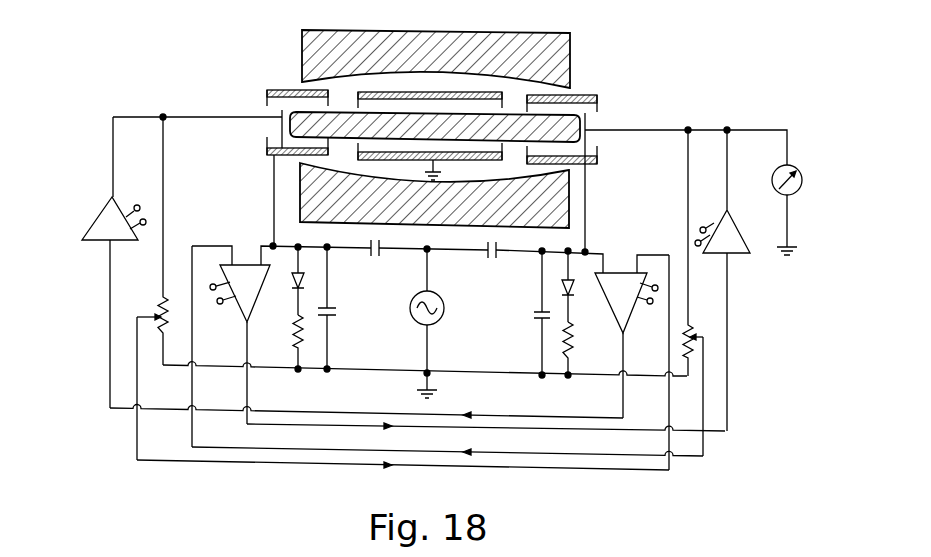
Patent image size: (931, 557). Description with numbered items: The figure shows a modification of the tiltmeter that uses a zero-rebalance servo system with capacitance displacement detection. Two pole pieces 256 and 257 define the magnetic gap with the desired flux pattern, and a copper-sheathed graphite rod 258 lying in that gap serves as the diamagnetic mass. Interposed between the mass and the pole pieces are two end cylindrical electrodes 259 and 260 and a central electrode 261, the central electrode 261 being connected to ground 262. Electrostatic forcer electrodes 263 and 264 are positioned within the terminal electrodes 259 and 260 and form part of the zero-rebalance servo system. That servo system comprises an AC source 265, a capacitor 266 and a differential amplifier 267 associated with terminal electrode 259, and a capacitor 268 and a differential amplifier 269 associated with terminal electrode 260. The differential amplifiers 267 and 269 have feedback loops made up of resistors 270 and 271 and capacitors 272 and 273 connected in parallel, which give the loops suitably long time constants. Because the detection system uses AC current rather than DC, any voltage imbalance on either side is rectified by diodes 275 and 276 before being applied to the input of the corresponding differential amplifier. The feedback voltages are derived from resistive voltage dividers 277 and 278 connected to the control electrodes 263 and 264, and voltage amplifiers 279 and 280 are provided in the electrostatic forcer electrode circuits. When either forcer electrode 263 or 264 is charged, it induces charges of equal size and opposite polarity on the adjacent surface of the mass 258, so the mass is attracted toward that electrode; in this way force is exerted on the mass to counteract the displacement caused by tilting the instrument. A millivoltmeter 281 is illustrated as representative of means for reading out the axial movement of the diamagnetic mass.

The pole piece 256 is at (362, 66).
The pole piece 257 is at (362, 212).
The copper-sheathed graphite rod 258 is at (282, 110).
The end cylindrical electrode 259 is at (578, 92).
The end cylindrical electrode 260 is at (293, 90).
The central electrode 261 is at (453, 93).
The ground 262 is at (424, 171).
The electrostatic forcer electrode 263 is at (589, 119).
The electrostatic forcer electrode 264 is at (310, 123).
The AC source 265 is at (445, 305).
The capacitor 266 is at (490, 260).
The differential amplifier 267 is at (636, 296).
The capacitor 268 is at (374, 258).
The differential amplifier 269 is at (262, 295).
The resistor 270 is at (571, 340).
The resistor 271 is at (295, 343).
The capacitor 272 is at (534, 318).
The capacitor 273 is at (337, 314).
The diode 275 is at (574, 276).
The diode 276 is at (293, 275).
The resistive voltage divider 277 is at (707, 317).
The resistive voltage divider 278 is at (155, 316).
The voltage amplifier 279 is at (735, 250).
The voltage amplifier 280 is at (107, 223).
The millivoltmeter 281 is at (802, 170).